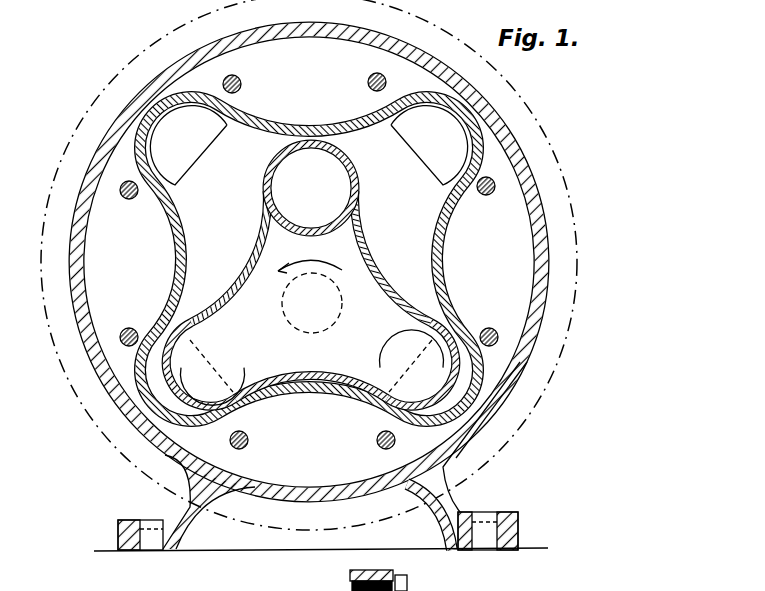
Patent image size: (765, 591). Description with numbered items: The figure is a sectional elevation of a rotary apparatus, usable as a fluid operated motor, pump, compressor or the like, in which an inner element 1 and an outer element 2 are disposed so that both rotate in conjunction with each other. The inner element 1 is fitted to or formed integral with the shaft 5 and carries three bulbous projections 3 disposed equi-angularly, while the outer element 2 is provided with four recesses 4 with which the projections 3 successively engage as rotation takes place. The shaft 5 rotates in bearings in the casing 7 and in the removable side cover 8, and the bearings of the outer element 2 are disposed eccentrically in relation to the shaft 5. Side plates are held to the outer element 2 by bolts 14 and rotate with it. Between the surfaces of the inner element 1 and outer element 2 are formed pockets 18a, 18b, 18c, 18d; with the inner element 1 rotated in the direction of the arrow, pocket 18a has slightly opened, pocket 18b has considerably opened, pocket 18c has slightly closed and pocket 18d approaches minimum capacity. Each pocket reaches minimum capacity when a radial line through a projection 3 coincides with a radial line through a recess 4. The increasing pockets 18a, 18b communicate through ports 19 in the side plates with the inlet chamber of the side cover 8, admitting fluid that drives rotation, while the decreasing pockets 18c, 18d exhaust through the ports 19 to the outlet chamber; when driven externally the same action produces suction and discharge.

The inner element 1 is at (268, 244).
The outer element 2 is at (175, 262).
The projections 3 is at (331, 160).
The recesses 4 is at (165, 190).
The shaft 5 is at (310, 296).
The casing 7 is at (305, 489).
The removable side cover 8 is at (394, 571).
The bolts 14 is at (368, 80).
The pocket 18a is at (443, 397).
The pocket 18b is at (425, 164).
The pocket 18c is at (201, 164).
The pocket 18d is at (147, 437).
The ports 19 is at (308, 256).